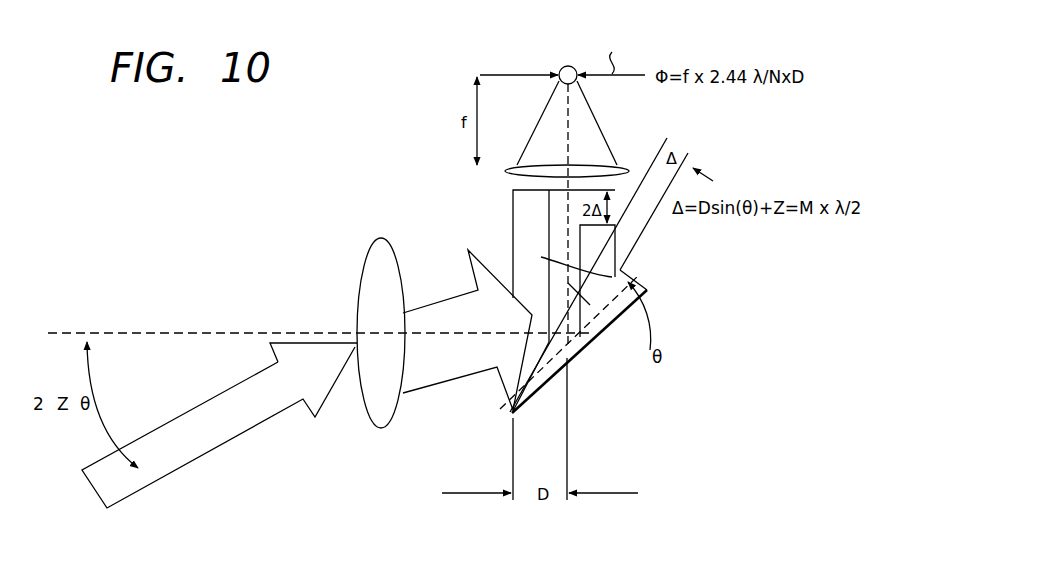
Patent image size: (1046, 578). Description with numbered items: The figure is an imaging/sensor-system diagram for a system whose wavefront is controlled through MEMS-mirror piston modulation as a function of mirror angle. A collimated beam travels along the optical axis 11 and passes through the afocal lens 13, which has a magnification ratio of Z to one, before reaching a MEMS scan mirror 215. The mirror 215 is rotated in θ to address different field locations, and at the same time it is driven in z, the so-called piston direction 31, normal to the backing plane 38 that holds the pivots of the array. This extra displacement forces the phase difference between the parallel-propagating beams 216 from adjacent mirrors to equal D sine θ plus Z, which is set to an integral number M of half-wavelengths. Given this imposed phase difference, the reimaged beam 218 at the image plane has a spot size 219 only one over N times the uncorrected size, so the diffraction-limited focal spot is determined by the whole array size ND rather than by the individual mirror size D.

The optical axis 11 is at (62, 333).
The afocal lens 13 is at (387, 412).
The piston direction 31 is at (597, 342).
The backing plane 38 is at (514, 416).
The mirror 215 is at (538, 395).
The parallel-propagating beam 216 is at (590, 242).
The reimaged beam 218 is at (563, 85).
The spot size 219 is at (567, 69).